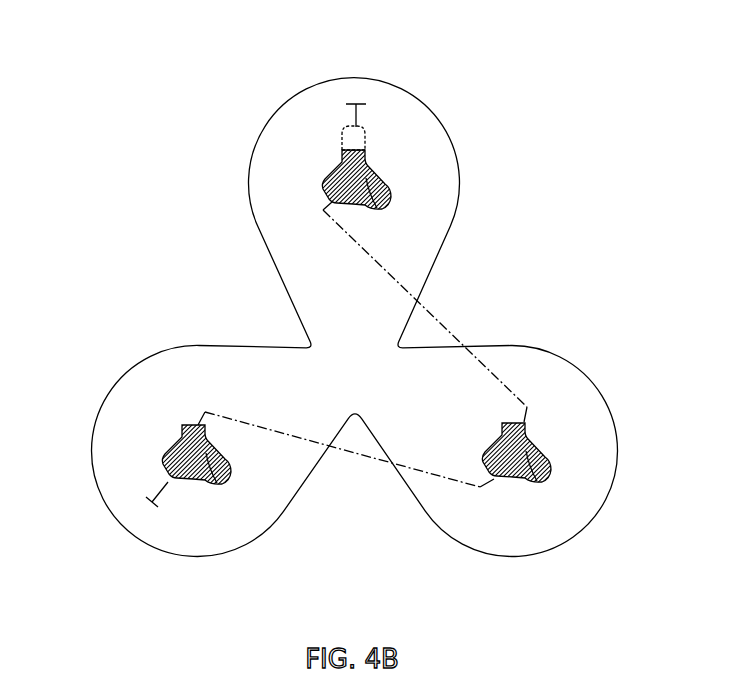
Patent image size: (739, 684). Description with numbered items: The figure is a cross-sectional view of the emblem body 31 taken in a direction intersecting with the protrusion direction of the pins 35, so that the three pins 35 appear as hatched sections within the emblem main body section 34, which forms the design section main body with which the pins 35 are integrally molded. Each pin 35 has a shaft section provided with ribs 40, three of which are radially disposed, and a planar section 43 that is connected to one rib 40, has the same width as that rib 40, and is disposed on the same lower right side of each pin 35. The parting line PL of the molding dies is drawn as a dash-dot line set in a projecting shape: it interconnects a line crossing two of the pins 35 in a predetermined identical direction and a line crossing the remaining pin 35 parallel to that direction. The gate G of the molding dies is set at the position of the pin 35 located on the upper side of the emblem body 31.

The emblem body 31 is at (463, 77).
The emblem main body section 34 is at (447, 137).
The pin 35 is at (327, 189).
The rib 40 is at (338, 153).
The planar section 43 is at (390, 188).
The gate G is at (363, 128).
The parting line PL is at (441, 322).